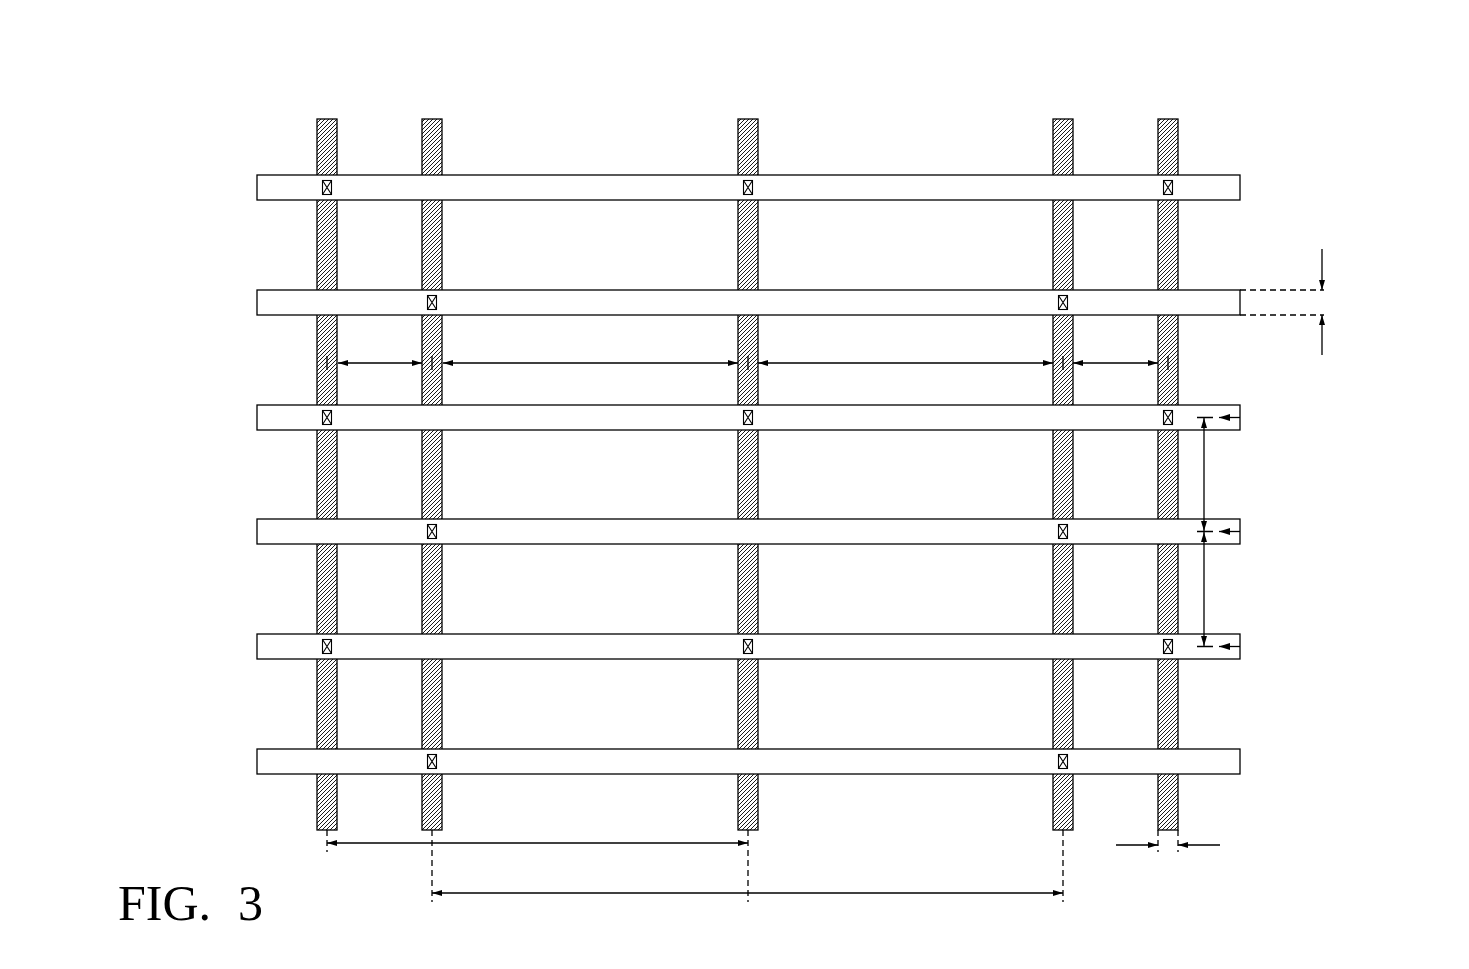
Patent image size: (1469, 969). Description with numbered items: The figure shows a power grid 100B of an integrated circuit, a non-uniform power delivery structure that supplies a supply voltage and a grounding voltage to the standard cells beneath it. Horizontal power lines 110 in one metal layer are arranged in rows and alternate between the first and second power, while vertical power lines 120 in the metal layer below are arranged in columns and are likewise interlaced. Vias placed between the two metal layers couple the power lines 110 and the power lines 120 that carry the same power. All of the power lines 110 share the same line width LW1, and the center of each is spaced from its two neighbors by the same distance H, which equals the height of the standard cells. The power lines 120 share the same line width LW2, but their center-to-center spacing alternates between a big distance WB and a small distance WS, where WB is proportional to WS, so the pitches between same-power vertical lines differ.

The power grid 100B is at (1215, 103).
The power lines 110 is at (135, 168).
The power lines 120 is at (1220, 52).
The small center-to-center distance WS is at (748, 346).
The big center-to-center distance WB is at (748, 346).
The line width of power lines 110 LW1 is at (1320, 302).
The line width of power lines 120 LW2 is at (1168, 861).
The standard cell height H is at (1216, 532).